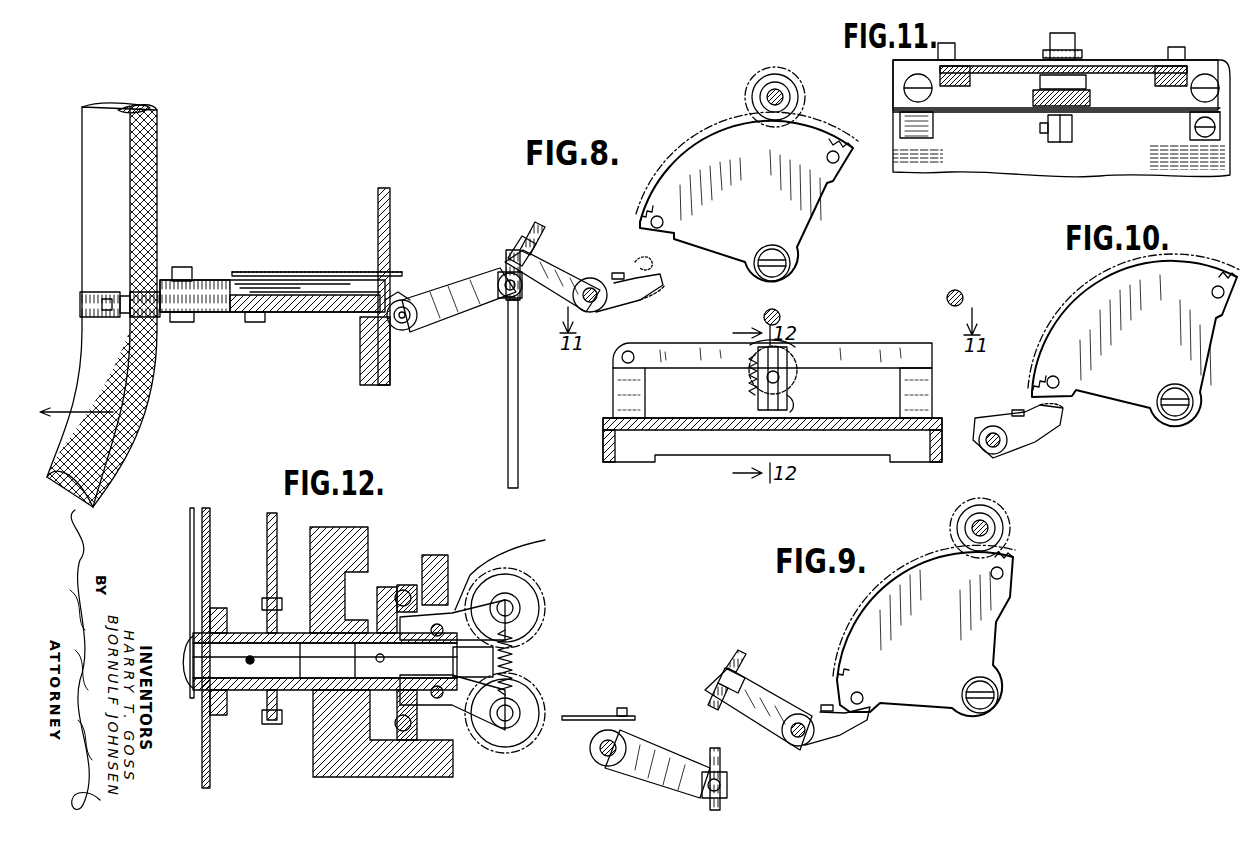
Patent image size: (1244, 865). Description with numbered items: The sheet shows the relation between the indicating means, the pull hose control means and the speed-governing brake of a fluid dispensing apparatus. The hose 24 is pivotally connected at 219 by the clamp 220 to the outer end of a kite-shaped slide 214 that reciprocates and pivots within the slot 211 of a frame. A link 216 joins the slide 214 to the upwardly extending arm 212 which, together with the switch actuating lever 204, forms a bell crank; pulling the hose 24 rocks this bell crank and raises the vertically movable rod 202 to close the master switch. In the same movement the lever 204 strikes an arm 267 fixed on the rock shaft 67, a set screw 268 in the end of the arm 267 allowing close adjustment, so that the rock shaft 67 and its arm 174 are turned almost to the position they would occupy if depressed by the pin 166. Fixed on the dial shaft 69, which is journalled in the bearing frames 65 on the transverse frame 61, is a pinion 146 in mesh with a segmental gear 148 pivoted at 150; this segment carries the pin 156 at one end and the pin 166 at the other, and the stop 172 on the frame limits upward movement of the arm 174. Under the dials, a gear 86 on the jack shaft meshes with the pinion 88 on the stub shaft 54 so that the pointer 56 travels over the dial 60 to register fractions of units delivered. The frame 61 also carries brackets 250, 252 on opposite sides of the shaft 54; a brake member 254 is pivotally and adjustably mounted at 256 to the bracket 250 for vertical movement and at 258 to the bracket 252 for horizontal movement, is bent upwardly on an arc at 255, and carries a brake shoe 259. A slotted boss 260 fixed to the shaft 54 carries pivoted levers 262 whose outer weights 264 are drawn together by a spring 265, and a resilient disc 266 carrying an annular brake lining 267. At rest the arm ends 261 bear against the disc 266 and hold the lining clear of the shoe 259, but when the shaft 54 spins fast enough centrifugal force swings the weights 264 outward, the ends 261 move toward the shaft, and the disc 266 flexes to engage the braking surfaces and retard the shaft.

In FIG. 8, the hose 24 is at (115, 187).
In FIG. 8, the stub shaft 54 is at (758, 385).
In FIG. 12, the stub shaft 54 is at (228, 652).
In FIG. 12, the pointer 56 is at (190, 556).
In FIG. 12, the dial 60 is at (210, 768).
In FIG. 8, the transverse frame 61 is at (603, 440).
In FIG. 11, the transverse frame 61 is at (1022, 160).
In FIG. 12, the bearing frames 65 is at (330, 540).
In FIG. 8, the rock shaft 67 is at (598, 302).
In FIG. 10, the rock shaft 67 is at (998, 452).
In FIG. 9, the rock shaft 67 is at (605, 765).
In FIG. 8, the dial shaft 69 is at (783, 95).
In FIG. 12, the gear 86 is at (267, 522).
In FIG. 12, the pinion 88 is at (272, 724).
In FIG. 8, the pinion 146 is at (746, 92).
In FIG. 9, the pinion 146 is at (1010, 528).
In FIG. 8, the segmental gear 148 is at (685, 178).
In FIG. 10, the segmental gear 148 is at (1078, 320).
In FIG. 9, the segmental gear 148 is at (985, 627).
In FIG. 8, the pivot 150 is at (790, 263).
In FIG. 10, the pivot 150 is at (1168, 418).
In FIG. 9, the pivot 150 is at (980, 695).
In FIG. 8, the pin 156 is at (839, 160).
In FIG. 10, the pin 156 is at (1212, 290).
In FIG. 9, the pin 156 is at (1003, 573).
In FIG. 8, the pin 166 is at (640, 256).
In FIG. 10, the pin 166 is at (1059, 380).
In FIG. 9, the pin 166 is at (860, 692).
In FIG. 8, the stop 172 is at (612, 276).
In FIG. 10, the stop 172 is at (1020, 402).
In FIG. 9, the stop 172 is at (825, 705).
In FIG. 8, the arm 174 is at (655, 292).
In FIG. 10, the arm 174 is at (1040, 435).
In FIG. 9, the arm 174 is at (837, 726).
In FIG. 8, the rod 202 is at (508, 380).
In FIG. 8, the lever 204 is at (470, 305).
In FIG. 9, the lever 204 is at (668, 790).
In FIG. 8, the slot 211 is at (330, 292).
In FIG. 8, the upwardly extending arm 212 is at (410, 303).
In FIG. 8, the slide 214 is at (218, 300).
In FIG. 8, the link 216 is at (365, 248).
In FIG. 9, the link 216 is at (582, 716).
In FIG. 8, the pivotal connection 219 is at (182, 266).
In FIG. 8, the clamp 220 is at (80, 305).
In FIG. 8, the bracket 250 is at (613, 395).
In FIG. 8, the bracket 252 is at (932, 388).
In FIG. 8, the brake member 254 is at (830, 362).
In FIG. 11, the brake member 254 is at (975, 112).
In FIG. 12, the brake member 254 is at (518, 566).
In FIG. 8, the arc 255 is at (790, 352).
In FIG. 11, the pivot 256 is at (933, 130).
In FIG. 11, the pivot 258 is at (1200, 138).
In FIG. 11, the brake shoe 259 is at (1090, 100).
In FIG. 12, the brake shoe 259 is at (420, 583).
In FIG. 12, the boss 260 is at (383, 610).
In FIG. 12, the arms 261 is at (430, 700).
In FIG. 12, the levers 262 is at (445, 570).
In FIG. 12, the weights 264 is at (525, 596).
In FIG. 8, the spring 265 is at (748, 375).
In FIG. 12, the spring 265 is at (512, 660).
In FIG. 12, the disc 266 is at (410, 590).
In FIG. 8, the arm 267 is at (560, 270).
In FIG. 9, the arm 267 is at (758, 690).
In FIG. 12, the arm 267 is at (407, 730).
In FIG. 8, the set screw 268 is at (522, 228).
In FIG. 9, the set screw 268 is at (740, 652).